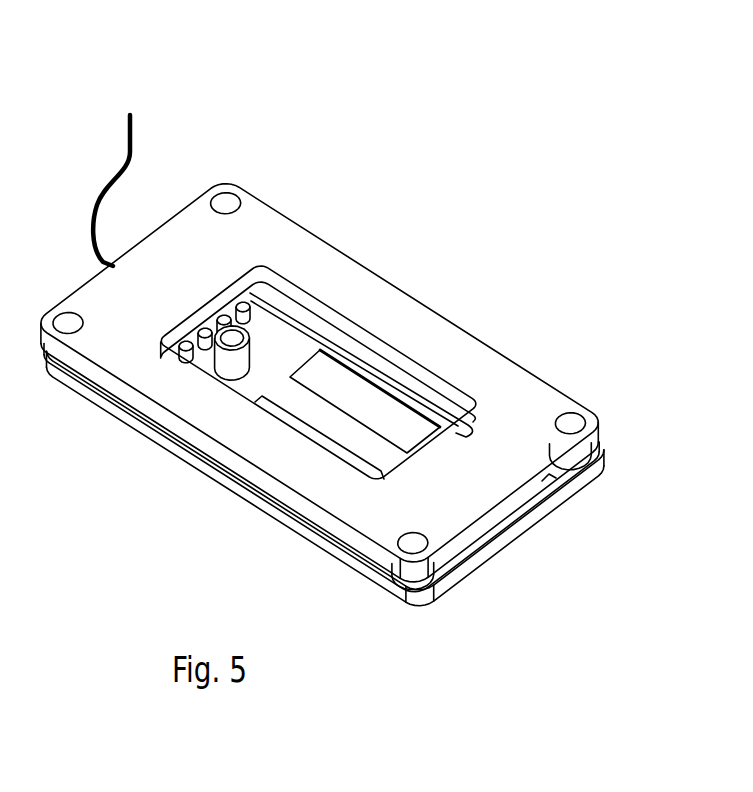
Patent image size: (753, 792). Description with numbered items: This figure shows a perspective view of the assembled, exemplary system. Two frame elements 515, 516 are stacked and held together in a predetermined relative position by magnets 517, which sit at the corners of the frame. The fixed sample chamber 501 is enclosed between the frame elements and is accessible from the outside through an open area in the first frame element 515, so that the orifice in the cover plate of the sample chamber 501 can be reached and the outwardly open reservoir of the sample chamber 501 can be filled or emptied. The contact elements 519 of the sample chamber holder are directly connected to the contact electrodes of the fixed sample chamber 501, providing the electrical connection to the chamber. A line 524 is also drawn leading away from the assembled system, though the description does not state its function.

The sample chamber 501 is at (396, 398).
The first frame element 515 is at (273, 221).
The frame element 516 is at (207, 472).
The magnets 517 is at (572, 413).
The contact elements 519 is at (252, 319).
The tubing 524 is at (100, 168).